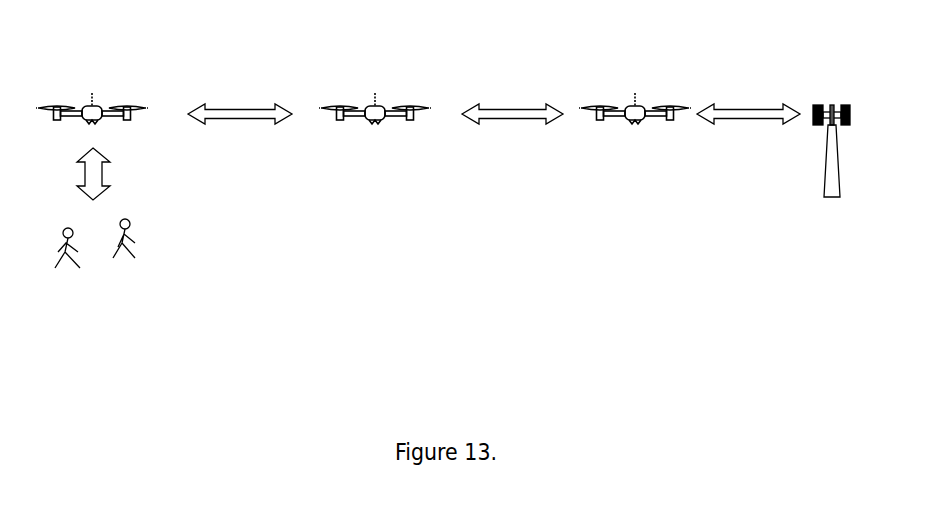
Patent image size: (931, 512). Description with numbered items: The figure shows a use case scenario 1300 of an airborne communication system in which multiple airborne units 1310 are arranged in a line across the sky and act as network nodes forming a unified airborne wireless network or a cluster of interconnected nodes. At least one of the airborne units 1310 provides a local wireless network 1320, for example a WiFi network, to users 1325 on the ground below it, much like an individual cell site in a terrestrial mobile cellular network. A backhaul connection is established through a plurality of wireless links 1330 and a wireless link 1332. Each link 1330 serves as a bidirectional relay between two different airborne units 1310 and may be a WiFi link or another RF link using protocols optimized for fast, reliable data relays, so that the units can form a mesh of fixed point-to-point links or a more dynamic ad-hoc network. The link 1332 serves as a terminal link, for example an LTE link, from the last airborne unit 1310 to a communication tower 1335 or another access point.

The use case scenario 1300 is at (443, 194).
The airborne units 1310 is at (342, 102).
The local wireless network 1320 is at (93, 175).
The users 1325 is at (137, 219).
The wireless links 1330 is at (273, 111).
The wireless link 1332 is at (772, 113).
The communication tower 1335 is at (833, 135).